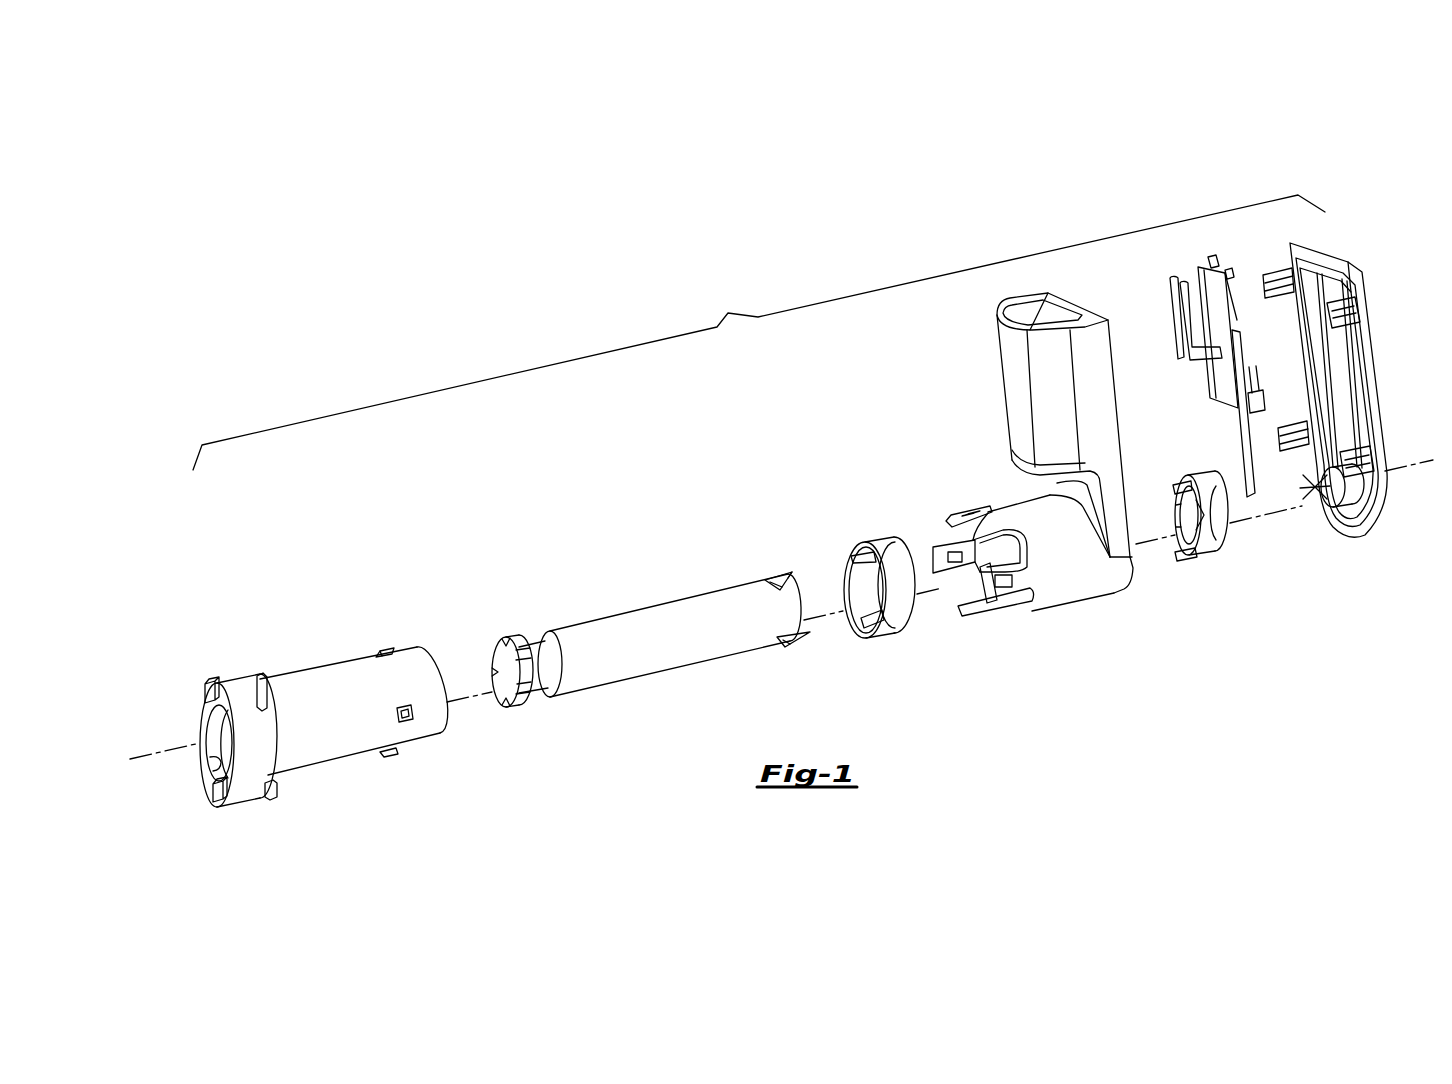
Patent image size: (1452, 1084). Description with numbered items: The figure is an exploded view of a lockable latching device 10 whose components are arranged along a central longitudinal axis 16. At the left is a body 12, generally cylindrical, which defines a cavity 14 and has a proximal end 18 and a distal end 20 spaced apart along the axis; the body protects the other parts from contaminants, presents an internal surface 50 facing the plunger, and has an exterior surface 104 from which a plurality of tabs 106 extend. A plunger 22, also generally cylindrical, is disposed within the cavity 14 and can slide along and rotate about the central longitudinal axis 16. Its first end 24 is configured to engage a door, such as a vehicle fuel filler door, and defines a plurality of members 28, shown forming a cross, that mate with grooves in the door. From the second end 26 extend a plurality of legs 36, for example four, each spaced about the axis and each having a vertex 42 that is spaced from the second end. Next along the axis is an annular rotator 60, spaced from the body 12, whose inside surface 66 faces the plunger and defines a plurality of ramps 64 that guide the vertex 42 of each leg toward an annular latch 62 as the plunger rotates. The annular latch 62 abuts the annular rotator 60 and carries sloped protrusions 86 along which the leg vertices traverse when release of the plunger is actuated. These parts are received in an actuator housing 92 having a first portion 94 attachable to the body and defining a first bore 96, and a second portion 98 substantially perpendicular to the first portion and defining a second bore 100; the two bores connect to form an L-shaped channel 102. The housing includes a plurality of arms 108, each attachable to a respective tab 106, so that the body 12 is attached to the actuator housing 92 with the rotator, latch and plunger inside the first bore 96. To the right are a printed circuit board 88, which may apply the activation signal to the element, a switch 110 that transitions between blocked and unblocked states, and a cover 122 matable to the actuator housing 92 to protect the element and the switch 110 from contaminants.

The lockable latching device 10 is at (759, 332).
The body 12 is at (332, 664).
The cavity 14 is at (218, 726).
The central longitudinal axis 16 is at (1432, 458).
The proximal end 18 is at (215, 710).
The distal end 20 is at (361, 684).
The plunger 22 is at (655, 608).
The first end 24 is at (645, 653).
The second end 26 is at (760, 610).
The plurality of members 28 is at (525, 695).
The plurality of legs 36 is at (778, 577).
The vertex 42 is at (792, 571).
The internal surface 50 is at (212, 766).
The annular rotator 60 is at (863, 611).
The annular latch 62 is at (1187, 532).
The plurality of ramps 64 is at (866, 622).
The inside surface 66 is at (860, 590).
The sloped protrusions 86 is at (1174, 502).
The printed circuit board 88 is at (1203, 274).
The actuator housing 92 is at (1044, 451).
The first portion 94 is at (1052, 580).
The first bore 96 is at (960, 592).
The second portion 98 is at (1013, 362).
The second bore 100 is at (1023, 310).
The L-shaped channel 102 is at (1042, 403).
The exterior surface 104 is at (312, 748).
The plurality of tabs 106 is at (410, 720).
The plurality of arms 108 is at (1003, 508).
The switch 110 is at (1262, 398).
The cover 122 is at (1357, 540).